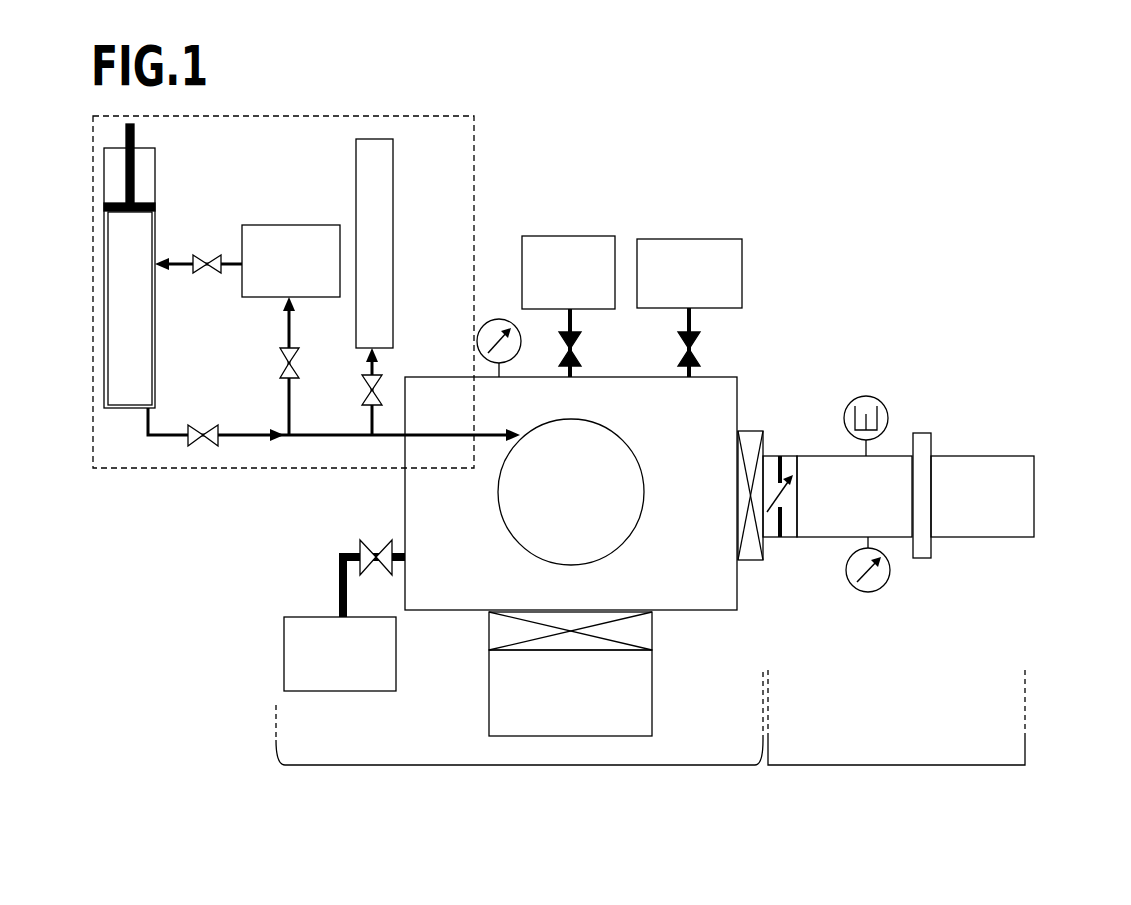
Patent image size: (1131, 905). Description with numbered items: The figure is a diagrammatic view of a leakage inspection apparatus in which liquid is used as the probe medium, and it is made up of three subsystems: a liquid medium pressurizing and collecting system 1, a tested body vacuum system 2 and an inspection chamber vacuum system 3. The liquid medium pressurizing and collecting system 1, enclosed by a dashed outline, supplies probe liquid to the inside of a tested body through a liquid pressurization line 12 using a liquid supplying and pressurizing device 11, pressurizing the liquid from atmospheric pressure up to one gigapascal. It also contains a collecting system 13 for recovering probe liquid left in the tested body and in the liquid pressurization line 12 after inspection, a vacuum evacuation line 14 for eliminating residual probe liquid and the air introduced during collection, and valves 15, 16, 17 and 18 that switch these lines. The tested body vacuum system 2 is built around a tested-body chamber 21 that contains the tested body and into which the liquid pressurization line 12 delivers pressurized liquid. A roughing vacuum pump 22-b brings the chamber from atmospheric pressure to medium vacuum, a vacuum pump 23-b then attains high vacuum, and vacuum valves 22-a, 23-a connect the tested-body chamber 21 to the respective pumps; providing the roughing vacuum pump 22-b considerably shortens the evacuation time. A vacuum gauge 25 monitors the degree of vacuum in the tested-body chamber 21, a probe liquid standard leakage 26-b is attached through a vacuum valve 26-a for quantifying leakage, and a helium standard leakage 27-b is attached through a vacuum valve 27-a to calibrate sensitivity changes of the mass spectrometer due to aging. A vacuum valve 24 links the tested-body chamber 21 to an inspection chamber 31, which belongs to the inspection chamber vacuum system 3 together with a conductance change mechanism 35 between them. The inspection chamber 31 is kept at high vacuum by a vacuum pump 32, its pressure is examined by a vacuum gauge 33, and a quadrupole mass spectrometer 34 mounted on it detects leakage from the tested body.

The liquid medium pressurizing and collecting system 1 is at (278, 317).
The tested body vacuum system 2 is at (519, 741).
The inspection chamber vacuum system 3 is at (907, 740).
The liquid supplying and pressurizing device 11 is at (210, 266).
The liquid pressurization line 12 is at (334, 454).
The collecting system 13 is at (296, 237).
The vacuum evacuation line 14 is at (444, 243).
The valve 15 is at (198, 291).
The valve 16 is at (315, 366).
The valve 17 is at (224, 416).
The valve 18 is at (401, 391).
The tested-body chamber 21 is at (570, 519).
The vacuum valve 22-a is at (406, 562).
The roughing vacuum pump 22-b is at (377, 674).
The vacuum valve 23-a is at (610, 642).
The vacuum pump 23-b is at (610, 693).
The vacuum valve 24 is at (726, 495).
The vacuum gauge 25 is at (473, 323).
The vacuum valve 26-a is at (600, 343).
The probe liquid standard leakage 26-b is at (571, 242).
The vacuum valve 27-a is at (719, 342).
The helium standard leakage 27-b is at (689, 244).
The inspection chamber 31 is at (838, 527).
The vacuum pump 32 is at (993, 482).
The vacuum gauge 33 is at (962, 579).
The quadrupole mass spectrometer 34 is at (972, 403).
The conductance change mechanism 35 is at (811, 448).